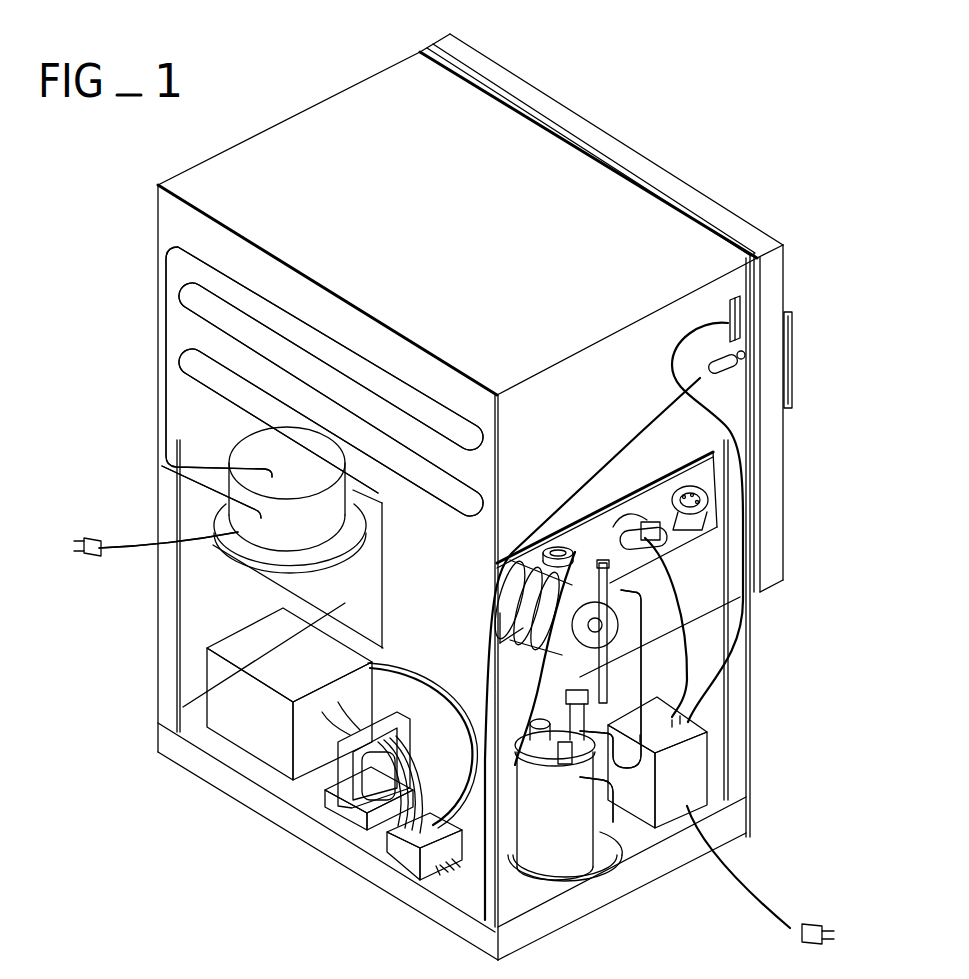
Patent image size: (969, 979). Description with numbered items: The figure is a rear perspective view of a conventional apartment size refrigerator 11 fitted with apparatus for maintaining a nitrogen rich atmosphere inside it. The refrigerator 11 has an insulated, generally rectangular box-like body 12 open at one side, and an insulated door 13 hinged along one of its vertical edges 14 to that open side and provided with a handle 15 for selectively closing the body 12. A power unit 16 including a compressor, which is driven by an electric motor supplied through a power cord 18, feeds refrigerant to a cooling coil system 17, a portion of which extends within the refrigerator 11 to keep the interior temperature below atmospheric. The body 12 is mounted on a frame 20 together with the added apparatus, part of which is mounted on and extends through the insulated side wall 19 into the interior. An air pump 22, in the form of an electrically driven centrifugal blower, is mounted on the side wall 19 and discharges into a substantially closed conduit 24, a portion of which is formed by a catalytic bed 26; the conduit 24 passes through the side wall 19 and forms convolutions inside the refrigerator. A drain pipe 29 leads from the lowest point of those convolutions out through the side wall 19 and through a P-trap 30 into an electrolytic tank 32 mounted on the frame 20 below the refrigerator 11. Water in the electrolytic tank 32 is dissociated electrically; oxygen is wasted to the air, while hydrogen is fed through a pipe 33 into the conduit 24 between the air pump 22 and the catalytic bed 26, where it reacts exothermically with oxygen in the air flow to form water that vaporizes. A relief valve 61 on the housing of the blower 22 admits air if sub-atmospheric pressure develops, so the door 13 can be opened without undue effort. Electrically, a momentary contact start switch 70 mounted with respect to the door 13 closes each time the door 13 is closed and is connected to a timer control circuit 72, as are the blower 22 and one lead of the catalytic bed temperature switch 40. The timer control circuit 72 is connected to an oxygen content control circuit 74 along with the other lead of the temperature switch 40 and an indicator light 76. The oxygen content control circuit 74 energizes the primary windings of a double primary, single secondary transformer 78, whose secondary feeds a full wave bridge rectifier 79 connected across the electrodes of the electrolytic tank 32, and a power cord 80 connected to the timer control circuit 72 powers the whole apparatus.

The refrigerator 11 is at (313, 126).
The body 12 is at (453, 270).
The door 13 is at (630, 152).
The vertical edge 14 is at (420, 52).
The handle 15 is at (790, 313).
The power unit 16 is at (318, 528).
The cooling coil system 17 is at (317, 324).
The power cord 18 is at (97, 535).
The side wall 19 is at (564, 424).
The frame 20 is at (338, 848).
The air pump 22 is at (527, 620).
The conduit 24 is at (668, 497).
The catalytic bed 26 is at (647, 530).
The drain pipe 29 is at (623, 592).
The P-trap 30 is at (607, 780).
The electrolytic tank 32 is at (565, 857).
The pipe 33 is at (573, 695).
The catalytic bed temperature switch 40 is at (637, 530).
The relief valve 61 is at (556, 546).
The start switch 70 is at (733, 305).
The timer control circuit 72 is at (695, 762).
The oxygen content control circuit 74 is at (402, 857).
The indicator light 76 is at (723, 371).
The transformer 78 is at (330, 806).
The full wave bridge rectifier 79 is at (258, 735).
The power cord 80 is at (795, 925).